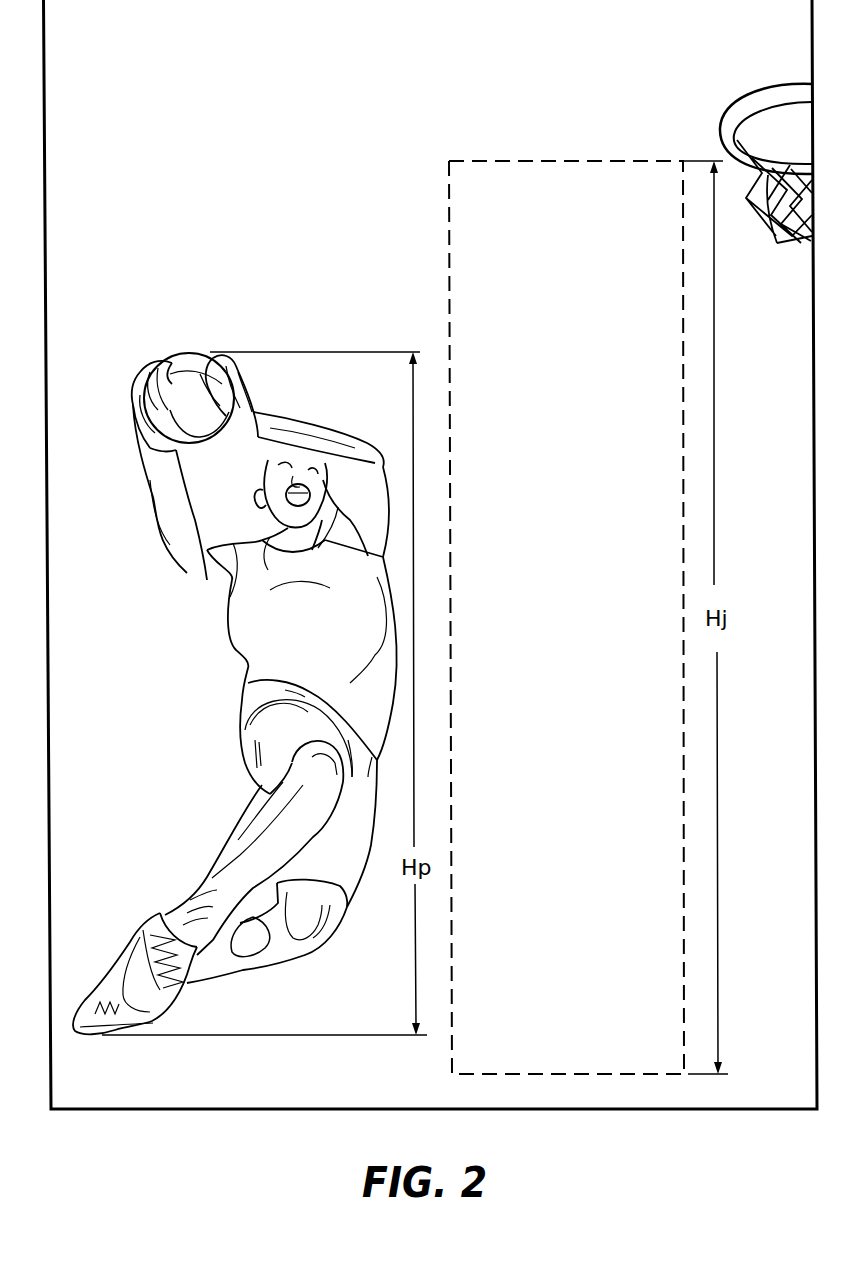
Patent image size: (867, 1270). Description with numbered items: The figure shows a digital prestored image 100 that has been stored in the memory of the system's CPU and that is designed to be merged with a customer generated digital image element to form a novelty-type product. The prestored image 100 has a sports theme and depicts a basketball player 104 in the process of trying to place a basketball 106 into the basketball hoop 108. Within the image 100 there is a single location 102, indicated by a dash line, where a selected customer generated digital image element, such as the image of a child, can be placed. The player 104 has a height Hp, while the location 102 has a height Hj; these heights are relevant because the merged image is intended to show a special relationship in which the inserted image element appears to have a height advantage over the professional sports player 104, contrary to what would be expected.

The prestored image 100 is at (167, 1116).
The location 102 is at (445, 227).
The basketball player 104 is at (303, 420).
The basketball 106 is at (182, 350).
The basketball hoop 108 is at (741, 101).